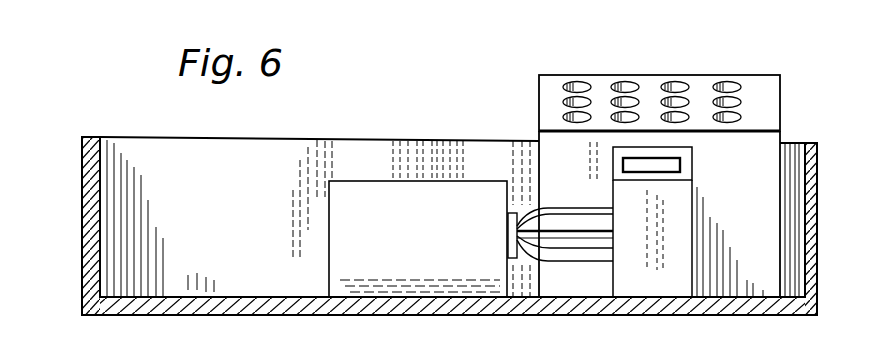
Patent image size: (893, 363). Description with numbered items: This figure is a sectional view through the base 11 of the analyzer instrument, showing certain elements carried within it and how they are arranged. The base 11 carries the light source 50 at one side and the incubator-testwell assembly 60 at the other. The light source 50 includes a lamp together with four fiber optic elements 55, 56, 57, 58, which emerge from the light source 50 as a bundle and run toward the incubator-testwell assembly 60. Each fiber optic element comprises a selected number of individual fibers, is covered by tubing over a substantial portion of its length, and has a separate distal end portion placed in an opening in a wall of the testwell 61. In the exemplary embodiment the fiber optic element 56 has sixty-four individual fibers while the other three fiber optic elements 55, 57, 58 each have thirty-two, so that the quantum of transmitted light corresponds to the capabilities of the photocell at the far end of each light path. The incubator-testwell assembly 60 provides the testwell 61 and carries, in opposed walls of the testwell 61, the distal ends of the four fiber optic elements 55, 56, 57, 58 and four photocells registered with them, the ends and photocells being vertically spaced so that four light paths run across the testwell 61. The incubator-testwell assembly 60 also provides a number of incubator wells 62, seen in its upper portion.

The base 11 is at (82, 242).
The light source 50 is at (337, 234).
The fiber optic element 55 is at (585, 192).
The fiber optic element 56 is at (598, 229).
The fiber optic element 57 is at (600, 246).
The fiber optic element 58 is at (597, 262).
The incubator-testwell assembly 60 is at (780, 103).
The testwell 61 is at (676, 167).
The incubator wells 62 is at (632, 83).